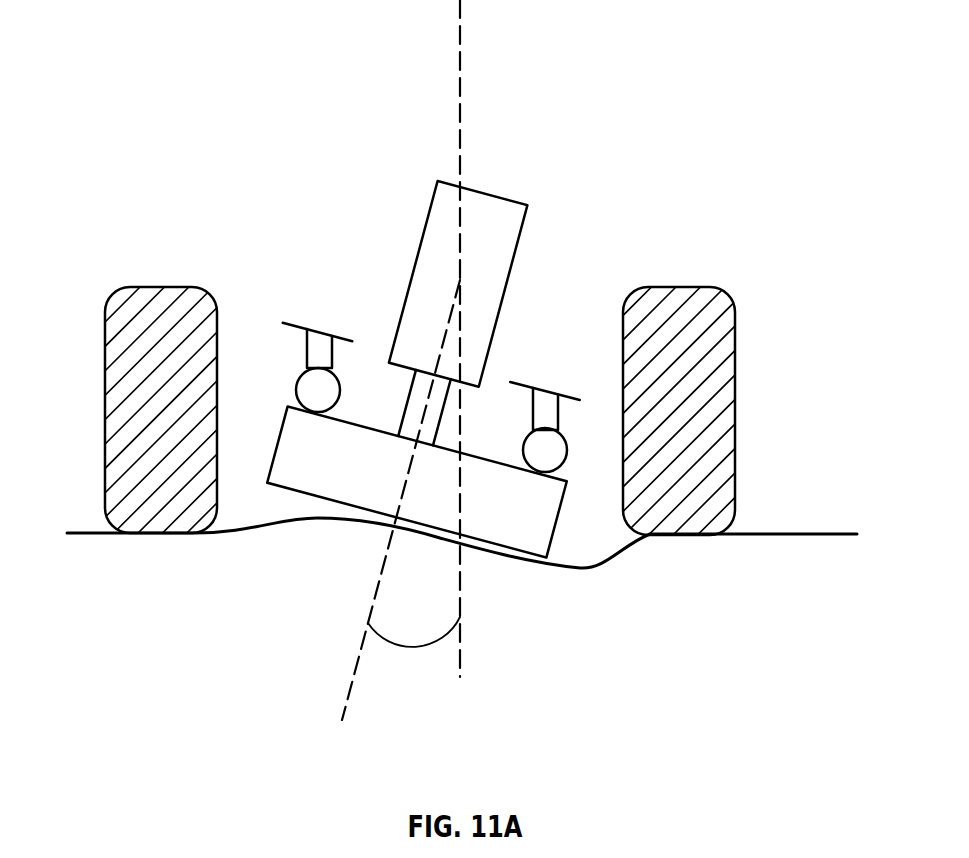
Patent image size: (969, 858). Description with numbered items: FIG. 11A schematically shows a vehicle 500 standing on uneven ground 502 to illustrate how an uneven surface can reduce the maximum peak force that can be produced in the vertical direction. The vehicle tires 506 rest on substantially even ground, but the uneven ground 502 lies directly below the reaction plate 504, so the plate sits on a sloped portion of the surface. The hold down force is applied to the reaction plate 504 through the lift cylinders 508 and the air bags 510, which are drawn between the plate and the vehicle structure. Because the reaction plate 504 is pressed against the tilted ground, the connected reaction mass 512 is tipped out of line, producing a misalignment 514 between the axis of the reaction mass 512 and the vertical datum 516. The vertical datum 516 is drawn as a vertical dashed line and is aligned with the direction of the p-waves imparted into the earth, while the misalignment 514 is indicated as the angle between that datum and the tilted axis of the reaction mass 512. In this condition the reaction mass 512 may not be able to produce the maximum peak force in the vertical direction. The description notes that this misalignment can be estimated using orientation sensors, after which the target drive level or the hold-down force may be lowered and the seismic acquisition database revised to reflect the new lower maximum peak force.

The vehicle 500 is at (413, 142).
The uneven ground 502 is at (310, 522).
The reaction plate 504 is at (518, 542).
The vehicle tires 506 is at (105, 370).
The lift cylinders 508 is at (310, 343).
The air bags 510 is at (306, 388).
The reaction mass 512 is at (480, 191).
The misalignment 514 is at (408, 648).
The vertical datum 516 is at (466, 0).